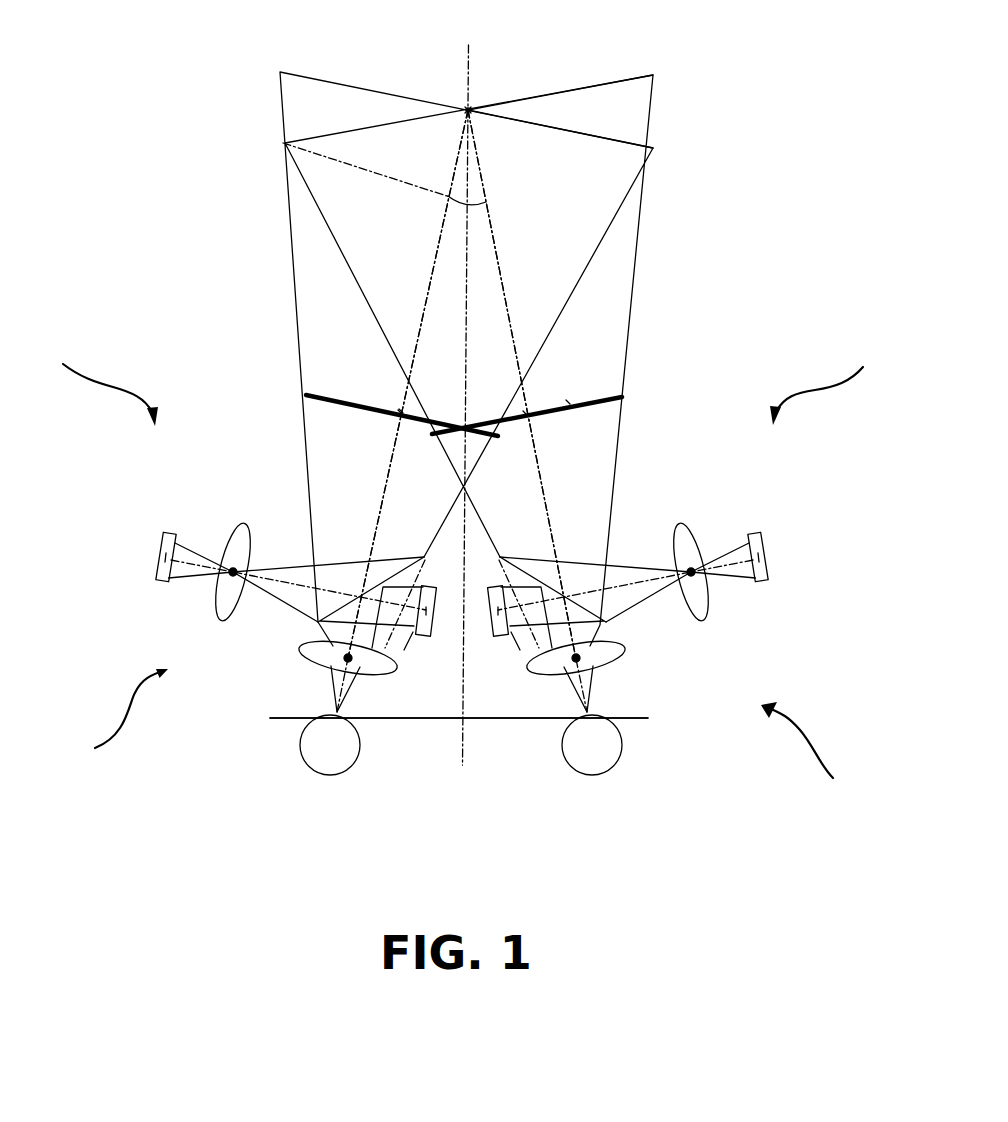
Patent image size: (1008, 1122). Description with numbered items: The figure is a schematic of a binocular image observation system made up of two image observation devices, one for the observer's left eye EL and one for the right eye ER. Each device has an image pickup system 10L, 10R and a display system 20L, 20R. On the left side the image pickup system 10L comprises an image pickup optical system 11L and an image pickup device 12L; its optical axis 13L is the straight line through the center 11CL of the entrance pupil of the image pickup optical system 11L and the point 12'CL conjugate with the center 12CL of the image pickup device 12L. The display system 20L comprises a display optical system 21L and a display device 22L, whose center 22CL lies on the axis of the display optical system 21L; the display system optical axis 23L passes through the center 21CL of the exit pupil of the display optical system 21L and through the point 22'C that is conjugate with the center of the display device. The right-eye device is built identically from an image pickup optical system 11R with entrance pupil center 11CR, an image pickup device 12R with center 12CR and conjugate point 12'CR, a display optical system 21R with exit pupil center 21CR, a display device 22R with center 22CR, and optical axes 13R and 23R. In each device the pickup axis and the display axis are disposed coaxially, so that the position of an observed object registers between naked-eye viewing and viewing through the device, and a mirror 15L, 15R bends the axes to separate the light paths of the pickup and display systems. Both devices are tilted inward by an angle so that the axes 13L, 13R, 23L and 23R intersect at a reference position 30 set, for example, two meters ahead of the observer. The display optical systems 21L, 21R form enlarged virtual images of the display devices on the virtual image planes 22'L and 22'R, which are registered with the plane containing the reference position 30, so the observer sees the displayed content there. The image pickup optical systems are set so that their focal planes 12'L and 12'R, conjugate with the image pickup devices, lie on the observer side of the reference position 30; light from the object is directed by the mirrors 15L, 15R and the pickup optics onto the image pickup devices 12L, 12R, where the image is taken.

The reference position 30 is at (466, 108).
The conjugate point of display device center 22'C is at (524, 59).
The right virtual image plane 22'R is at (579, 57).
The left virtual image plane 22'L is at (652, 130).
The left image pickup system optical axis 13L is at (437, 240).
The right image pickup system optical axis 13R is at (496, 240).
The conjugate point of left image pickup device center 12'CL is at (253, 307).
The left focal plane 12'L is at (257, 335).
The conjugate point of right image pickup device center 12'CR is at (693, 309).
The right focal plane 12'R is at (710, 331).
The left mirror 15L is at (424, 557).
The right mirror 15R is at (500, 557).
The left image pickup system 10L is at (82, 356).
The right image pickup system 10R is at (887, 360).
The left image pickup device 12L is at (161, 531).
The center of left image pickup device 12CL is at (158, 582).
The left image pickup optical system 11L is at (243, 523).
The center of entrance pupil of left image pickup optical system 11CL is at (233, 568).
The left display device 22L is at (418, 637).
The center of left display device 22CL is at (411, 636).
The left display optical system 21L is at (298, 647).
The center of exit pupil of left display optical system 21CL is at (325, 657).
The left display system optical axis 23L is at (323, 685).
The left observing eye EL is at (327, 743).
The left display system 20L is at (92, 777).
The right image pickup device 12R is at (759, 563).
The center of right image pickup device 12CR is at (752, 589).
The right image pickup optical system 11R is at (683, 528).
The center of entrance pupil of right image pickup optical system 11CR is at (694, 571).
The right display device 22R is at (506, 637).
The center of right display device 22CR is at (513, 636).
The right display optical system 21R is at (624, 649).
The center of exit pupil of right display optical system 21CR is at (600, 657).
The right display system optical axis 23R is at (603, 686).
The right observing eye ER is at (596, 743).
The right display system 20R is at (888, 795).